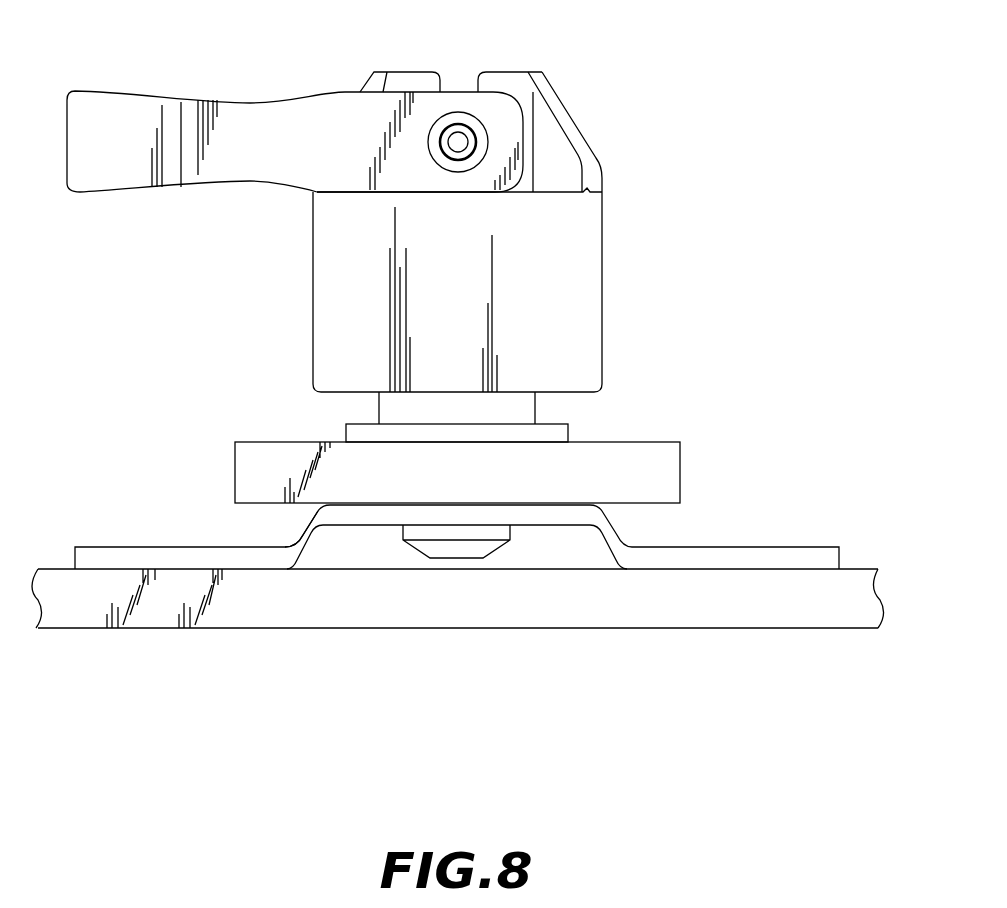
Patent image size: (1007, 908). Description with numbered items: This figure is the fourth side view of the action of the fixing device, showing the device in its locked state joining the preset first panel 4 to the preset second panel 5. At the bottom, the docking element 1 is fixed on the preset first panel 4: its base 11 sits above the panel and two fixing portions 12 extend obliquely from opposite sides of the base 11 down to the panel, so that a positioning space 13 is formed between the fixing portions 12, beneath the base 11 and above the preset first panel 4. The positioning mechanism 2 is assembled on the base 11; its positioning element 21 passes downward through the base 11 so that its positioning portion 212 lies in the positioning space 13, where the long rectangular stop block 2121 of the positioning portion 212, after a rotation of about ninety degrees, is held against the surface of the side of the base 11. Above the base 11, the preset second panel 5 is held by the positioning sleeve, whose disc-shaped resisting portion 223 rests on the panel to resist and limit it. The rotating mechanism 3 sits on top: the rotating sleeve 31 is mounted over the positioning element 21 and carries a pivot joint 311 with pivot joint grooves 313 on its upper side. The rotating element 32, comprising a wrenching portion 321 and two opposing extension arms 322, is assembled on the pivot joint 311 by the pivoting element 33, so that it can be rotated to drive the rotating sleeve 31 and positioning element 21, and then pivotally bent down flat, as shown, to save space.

The docking element 1 is at (478, 581).
The base 11 is at (542, 513).
The fixing portions 12 is at (807, 558).
The positioning space 13 is at (366, 543).
The positioning mechanism 2 is at (535, 654).
The positioning element 21 is at (496, 654).
The positioning portion 212 is at (456, 654).
The stop block 2121 is at (460, 545).
The disc-shaped resisting portion 223 is at (355, 433).
The rotating mechanism 3 is at (403, 203).
The rotating sleeve 31 is at (624, 229).
The pivot joint 311 is at (512, 85).
The pivot joint grooves 313 is at (438, 82).
The rotating element 32 is at (391, 153).
The wrenching portion 321 is at (122, 128).
The extension arms 322 is at (508, 145).
The pivoting element 33 is at (473, 132).
The preset first panel 4 is at (817, 608).
The preset second panel 5 is at (650, 478).